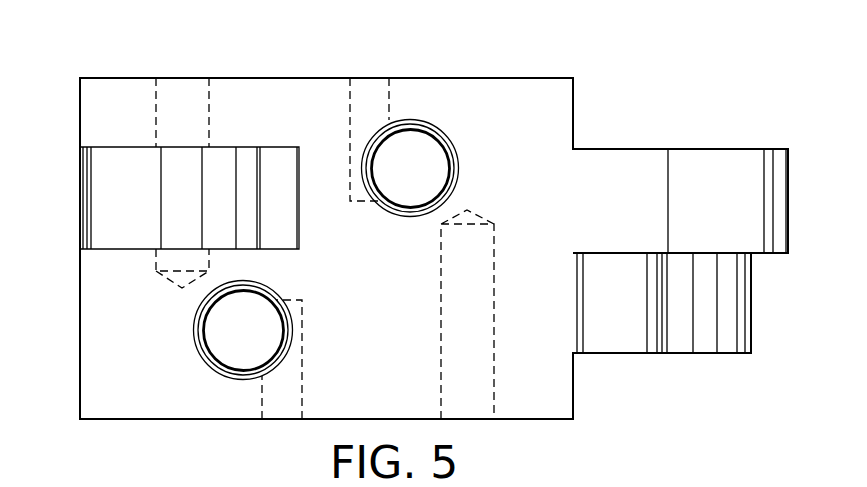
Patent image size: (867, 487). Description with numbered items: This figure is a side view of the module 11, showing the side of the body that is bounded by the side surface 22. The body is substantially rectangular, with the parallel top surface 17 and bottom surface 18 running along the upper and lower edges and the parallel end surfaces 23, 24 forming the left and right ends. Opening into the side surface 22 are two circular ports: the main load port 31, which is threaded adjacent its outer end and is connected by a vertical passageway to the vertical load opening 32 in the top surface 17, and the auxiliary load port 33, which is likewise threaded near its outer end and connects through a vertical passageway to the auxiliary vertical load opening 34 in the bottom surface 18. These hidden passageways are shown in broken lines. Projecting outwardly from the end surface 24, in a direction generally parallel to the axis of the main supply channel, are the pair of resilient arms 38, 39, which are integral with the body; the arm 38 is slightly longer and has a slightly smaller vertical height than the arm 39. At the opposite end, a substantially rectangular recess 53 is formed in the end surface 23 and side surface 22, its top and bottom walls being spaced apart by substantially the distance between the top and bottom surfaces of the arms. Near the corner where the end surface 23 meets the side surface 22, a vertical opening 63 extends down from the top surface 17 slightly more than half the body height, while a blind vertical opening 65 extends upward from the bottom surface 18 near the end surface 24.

The module 11 is at (118, 48).
The top surface 17 is at (275, 78).
The bottom surface 18 is at (383, 421).
The side surface 22 is at (349, 355).
The end surface 23 is at (80, 375).
The end surface 24 is at (575, 405).
The main load port 31 is at (442, 146).
The vertical load opening 32 is at (388, 100).
The auxiliary load port 33 is at (212, 349).
The auxiliary vertical load opening 34 is at (300, 393).
The resilient arm 38 is at (697, 167).
The resilient arm 39 is at (615, 335).
The recess 53 is at (110, 247).
The vertical opening 63 is at (165, 113).
The vertical opening 65 is at (493, 387).